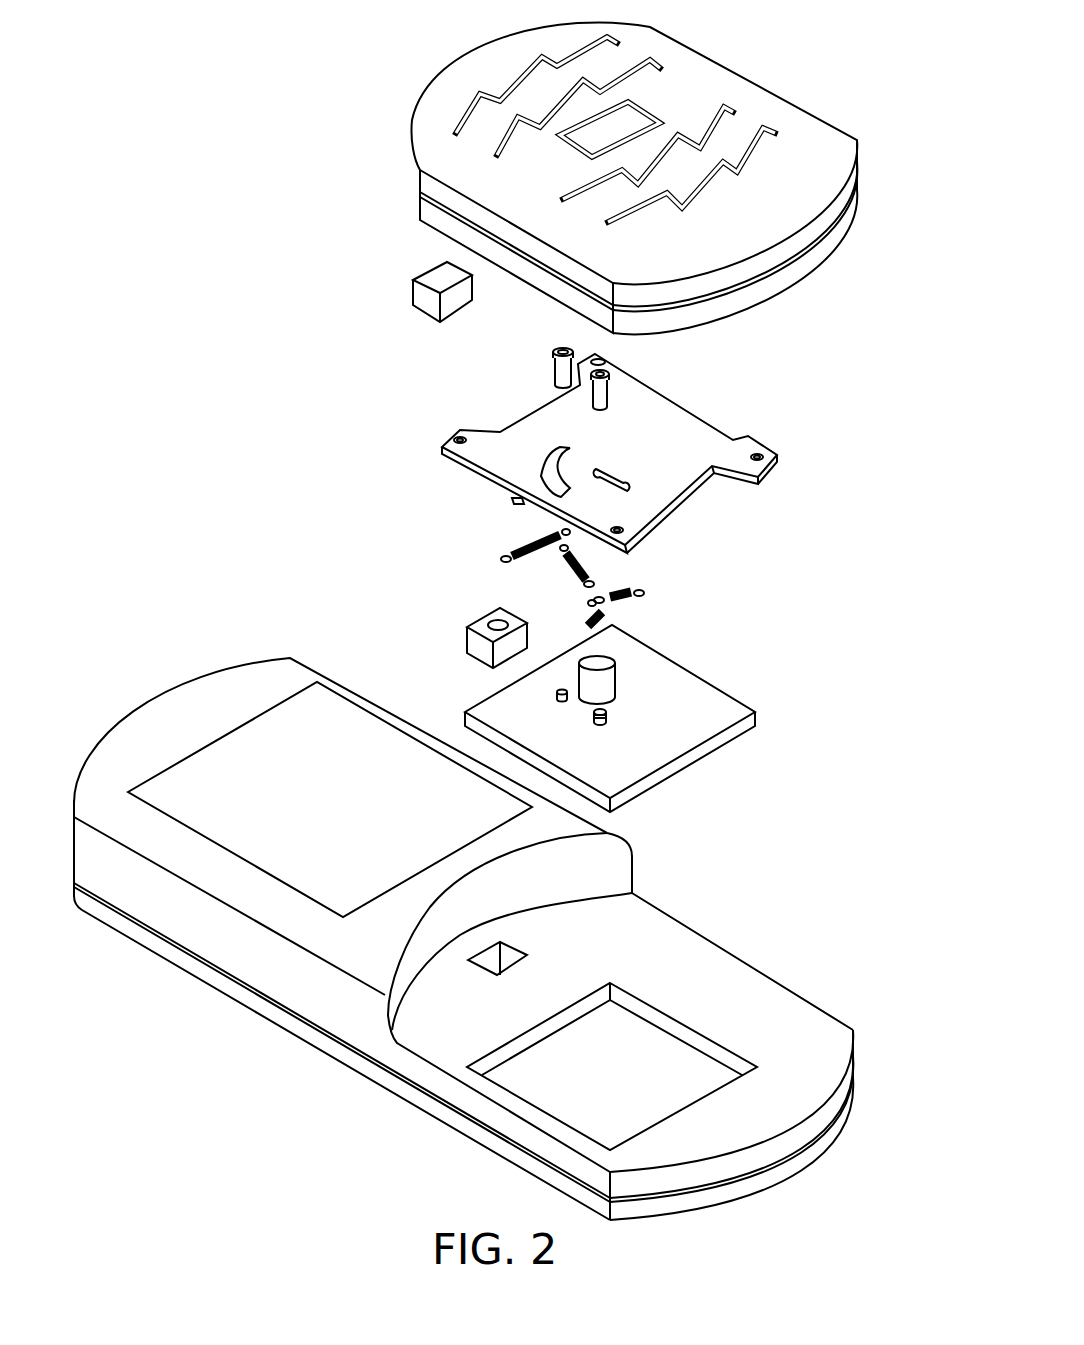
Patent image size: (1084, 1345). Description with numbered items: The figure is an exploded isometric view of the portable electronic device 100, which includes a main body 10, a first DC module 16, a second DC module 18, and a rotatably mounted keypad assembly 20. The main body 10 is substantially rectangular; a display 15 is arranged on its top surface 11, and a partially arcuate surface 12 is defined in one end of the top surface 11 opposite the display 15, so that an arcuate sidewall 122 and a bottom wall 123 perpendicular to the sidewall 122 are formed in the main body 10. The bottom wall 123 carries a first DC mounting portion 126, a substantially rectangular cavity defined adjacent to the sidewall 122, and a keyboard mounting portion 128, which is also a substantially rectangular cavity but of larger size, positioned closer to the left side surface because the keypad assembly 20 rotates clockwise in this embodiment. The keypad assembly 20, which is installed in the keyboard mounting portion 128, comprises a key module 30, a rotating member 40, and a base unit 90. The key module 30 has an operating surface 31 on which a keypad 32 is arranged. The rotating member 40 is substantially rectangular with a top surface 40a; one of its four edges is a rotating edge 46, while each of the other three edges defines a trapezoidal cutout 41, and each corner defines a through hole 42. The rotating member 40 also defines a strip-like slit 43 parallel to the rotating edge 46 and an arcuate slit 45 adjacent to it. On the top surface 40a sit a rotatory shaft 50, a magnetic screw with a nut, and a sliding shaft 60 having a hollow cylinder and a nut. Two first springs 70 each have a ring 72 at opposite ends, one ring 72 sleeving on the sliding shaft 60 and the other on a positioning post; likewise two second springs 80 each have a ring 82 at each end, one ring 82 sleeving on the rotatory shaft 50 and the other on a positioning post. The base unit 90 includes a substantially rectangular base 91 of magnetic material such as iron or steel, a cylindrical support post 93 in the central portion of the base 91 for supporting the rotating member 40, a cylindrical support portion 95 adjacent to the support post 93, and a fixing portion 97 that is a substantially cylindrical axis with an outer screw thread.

The portable electronic device 100 is at (336, 90).
The main body 10 is at (497, 925).
The top surface 11 is at (357, 928).
The partially arcuate surface 12 is at (460, 1033).
The display 15 is at (295, 743).
The first DC module 16 is at (480, 627).
The second DC module 18 is at (432, 278).
The keypad assembly 20 is at (878, 289).
The key module 30 is at (642, 178).
The operating surface 31 is at (752, 105).
The keypad 32 is at (650, 92).
The rotating member 40 is at (616, 446).
The top surface 40a is at (627, 383).
The trapezoidal cutout 41 is at (697, 490).
The through hole 42 is at (450, 437).
The strip-like slit 43 is at (637, 483).
The arcuate slit 45 is at (542, 470).
The rotating edge 46 is at (490, 478).
The rotatory shaft 50 is at (553, 364).
The sliding shaft 60 is at (595, 392).
The first spring 70 is at (508, 544).
The ring 72 is at (575, 582).
The second spring 80 is at (618, 617).
The ring 82 is at (640, 594).
The base unit 90 is at (638, 718).
The base 91 is at (717, 713).
The support post 93 is at (600, 663).
The support portion 95 is at (557, 693).
The fixing portion 97 is at (607, 708).
The arcuate sidewall 122 is at (603, 863).
The bottom wall 123 is at (787, 1030).
The first DC mounting portion 126 is at (508, 955).
The keyboard mounting portion 128 is at (580, 1103).